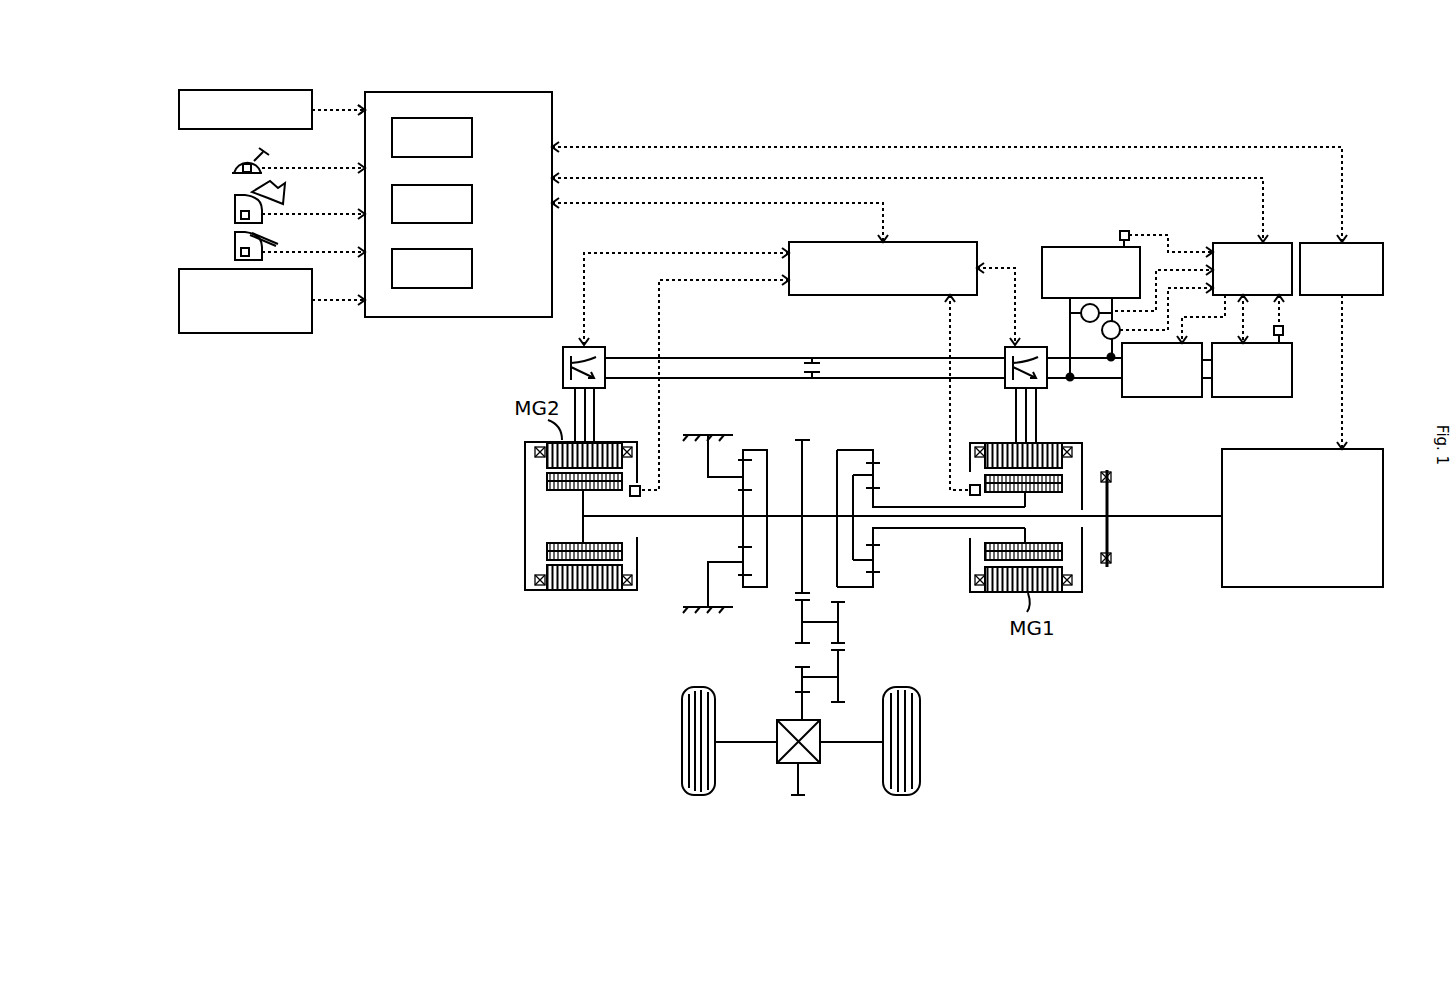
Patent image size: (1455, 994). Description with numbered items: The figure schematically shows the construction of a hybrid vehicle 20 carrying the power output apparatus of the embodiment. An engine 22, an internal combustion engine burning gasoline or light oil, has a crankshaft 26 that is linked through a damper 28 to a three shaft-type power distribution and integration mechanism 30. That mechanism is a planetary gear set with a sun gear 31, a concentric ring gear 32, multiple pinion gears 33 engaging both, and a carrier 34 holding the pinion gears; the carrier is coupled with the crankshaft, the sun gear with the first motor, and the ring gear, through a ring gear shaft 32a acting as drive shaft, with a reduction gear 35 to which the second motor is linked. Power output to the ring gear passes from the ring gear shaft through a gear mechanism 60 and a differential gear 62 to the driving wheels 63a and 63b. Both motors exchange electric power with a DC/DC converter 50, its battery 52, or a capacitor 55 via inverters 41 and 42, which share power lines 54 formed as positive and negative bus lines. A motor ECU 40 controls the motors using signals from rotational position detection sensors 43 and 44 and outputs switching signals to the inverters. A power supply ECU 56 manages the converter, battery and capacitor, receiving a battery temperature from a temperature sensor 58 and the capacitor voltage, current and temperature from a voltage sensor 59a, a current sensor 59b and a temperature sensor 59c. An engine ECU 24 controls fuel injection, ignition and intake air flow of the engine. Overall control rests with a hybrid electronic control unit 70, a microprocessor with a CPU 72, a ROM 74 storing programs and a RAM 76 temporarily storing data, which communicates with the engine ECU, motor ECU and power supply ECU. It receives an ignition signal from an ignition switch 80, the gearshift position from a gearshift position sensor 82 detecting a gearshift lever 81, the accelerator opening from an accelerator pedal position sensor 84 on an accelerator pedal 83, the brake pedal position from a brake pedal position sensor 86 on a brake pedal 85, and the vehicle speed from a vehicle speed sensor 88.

The hybrid vehicle 20 is at (1060, 119).
The engine 22 is at (1300, 587).
The engine ECU 24 is at (1370, 243).
The crankshaft 26 is at (1165, 516).
The damper 28 is at (1107, 567).
The power distribution and integration mechanism 30 is at (931, 502).
The sun gear 31 is at (876, 532).
The ring gear 32 is at (876, 578).
The ring gear shaft 32a is at (785, 516).
The pinion gears 33 is at (876, 555).
The carrier 34 is at (853, 478).
The reduction gear 35 is at (756, 426).
The motor ECU 40 is at (925, 242).
The inverter 41 is at (1010, 344).
The inverter 42 is at (592, 346).
The rotational position detection sensor 43 is at (974, 485).
The rotational position detection sensor 44 is at (635, 486).
The DC/DC converter 50 is at (1163, 397).
The battery 52 is at (1250, 397).
The power lines 54 is at (867, 358).
The capacitor 55 is at (1098, 247).
The power supply ECU 56 is at (1216, 243).
The temperature sensor 58 is at (1283, 328).
The voltage sensor 59a is at (1090, 322).
The current sensor 59b is at (1105, 340).
The temperature sensor 59c is at (1127, 231).
The gear mechanism 60 is at (885, 663).
The differential gear 62 is at (823, 757).
The driving wheel 63a is at (677, 773).
The driving wheel 63b is at (920, 773).
The hybrid electronic control unit 70 is at (458, 185).
The CPU 72 is at (472, 140).
The ROM 74 is at (472, 206).
The RAM 76 is at (472, 272).
The ignition switch 80 is at (179, 101).
The gearshift lever 81 is at (262, 153).
The gearshift position sensor 82 is at (243, 168).
The accelerator pedal 83 is at (268, 197).
The accelerator pedal position sensor 84 is at (241, 214).
The brake pedal 85 is at (268, 243).
The brake pedal position sensor 86 is at (241, 252).
The vehicle speed sensor 88 is at (179, 296).